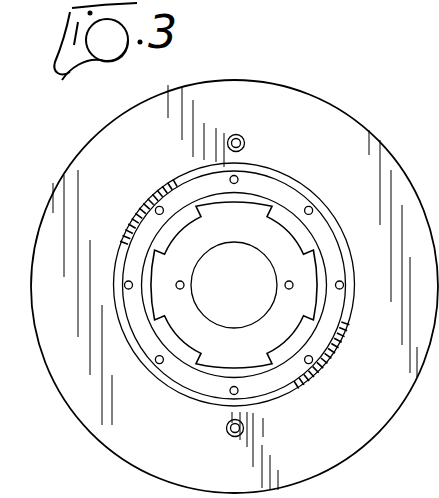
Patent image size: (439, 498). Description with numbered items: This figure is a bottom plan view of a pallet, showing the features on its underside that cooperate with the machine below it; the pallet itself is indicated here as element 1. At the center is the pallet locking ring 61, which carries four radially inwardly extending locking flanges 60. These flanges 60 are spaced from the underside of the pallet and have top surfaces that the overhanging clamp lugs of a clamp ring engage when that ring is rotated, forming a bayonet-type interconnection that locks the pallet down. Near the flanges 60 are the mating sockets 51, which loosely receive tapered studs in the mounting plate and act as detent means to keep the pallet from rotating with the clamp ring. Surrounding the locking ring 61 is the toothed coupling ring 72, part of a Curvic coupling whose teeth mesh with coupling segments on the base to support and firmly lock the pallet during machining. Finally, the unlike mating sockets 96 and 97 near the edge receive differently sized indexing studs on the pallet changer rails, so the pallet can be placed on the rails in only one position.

The disc 1 is at (393, 175).
The mating sockets 51 is at (285, 283).
The locking flanges 60 is at (278, 214).
The pallet locking ring 61 is at (252, 195).
The toothed coupling ring 72 is at (150, 205).
The mating socket 96 is at (231, 135).
The mating socket 97 is at (243, 431).